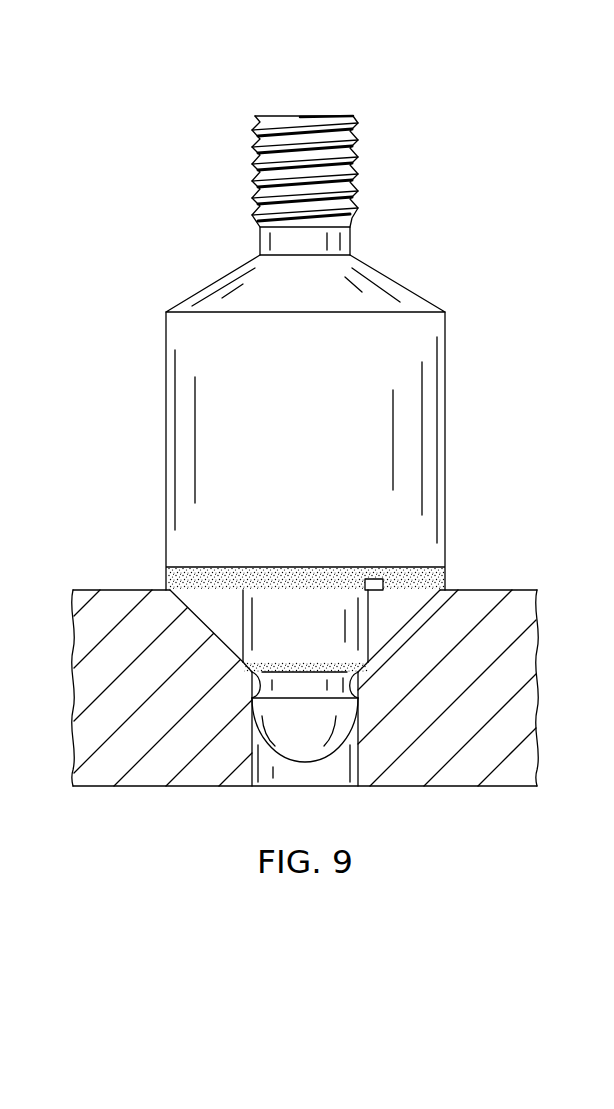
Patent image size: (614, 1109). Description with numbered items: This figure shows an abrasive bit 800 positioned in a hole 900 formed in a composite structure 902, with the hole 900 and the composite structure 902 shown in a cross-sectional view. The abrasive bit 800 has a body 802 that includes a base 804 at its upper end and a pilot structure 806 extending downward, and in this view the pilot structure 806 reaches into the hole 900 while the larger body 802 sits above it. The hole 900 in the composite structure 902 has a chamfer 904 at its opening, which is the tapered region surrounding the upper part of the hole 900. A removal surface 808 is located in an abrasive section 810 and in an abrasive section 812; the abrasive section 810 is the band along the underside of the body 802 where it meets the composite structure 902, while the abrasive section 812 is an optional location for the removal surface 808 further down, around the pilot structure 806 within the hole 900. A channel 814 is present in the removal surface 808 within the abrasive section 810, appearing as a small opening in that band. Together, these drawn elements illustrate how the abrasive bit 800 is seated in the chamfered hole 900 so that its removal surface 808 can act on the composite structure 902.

The abrasive bit 800 is at (424, 144).
The body 802 is at (445, 437).
The base 804 is at (250, 170).
The pilot structure 806 is at (298, 752).
The removal surface 808 is at (323, 592).
The abrasive section 810 is at (267, 570).
The abrasive section 812 is at (257, 686).
The channel 814 is at (377, 579).
The hole 900 is at (331, 778).
The composite structure 902 is at (537, 712).
The chamfer 904 is at (209, 624).